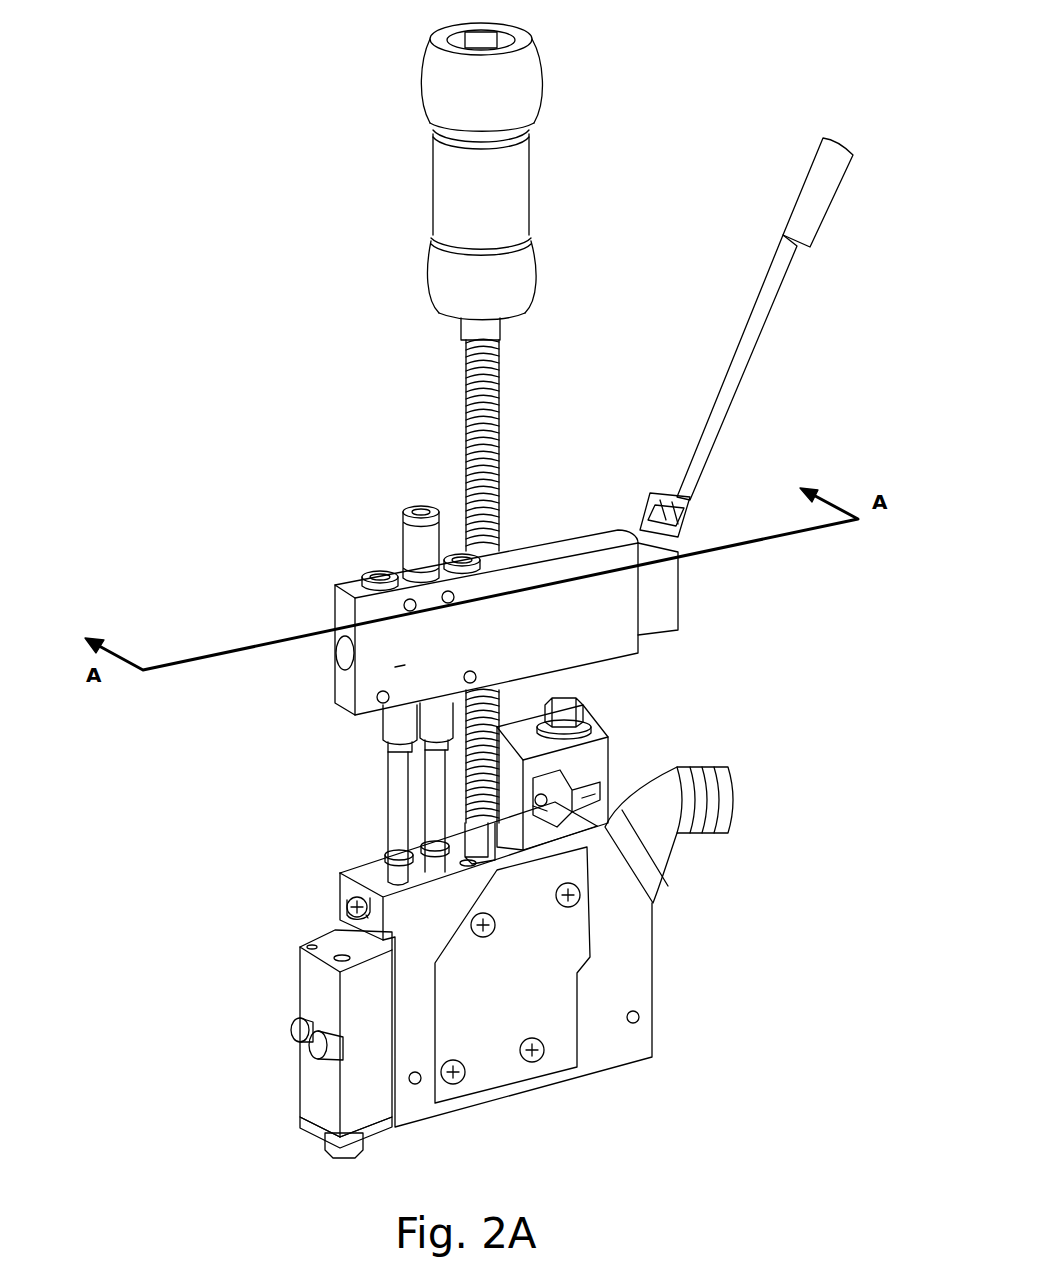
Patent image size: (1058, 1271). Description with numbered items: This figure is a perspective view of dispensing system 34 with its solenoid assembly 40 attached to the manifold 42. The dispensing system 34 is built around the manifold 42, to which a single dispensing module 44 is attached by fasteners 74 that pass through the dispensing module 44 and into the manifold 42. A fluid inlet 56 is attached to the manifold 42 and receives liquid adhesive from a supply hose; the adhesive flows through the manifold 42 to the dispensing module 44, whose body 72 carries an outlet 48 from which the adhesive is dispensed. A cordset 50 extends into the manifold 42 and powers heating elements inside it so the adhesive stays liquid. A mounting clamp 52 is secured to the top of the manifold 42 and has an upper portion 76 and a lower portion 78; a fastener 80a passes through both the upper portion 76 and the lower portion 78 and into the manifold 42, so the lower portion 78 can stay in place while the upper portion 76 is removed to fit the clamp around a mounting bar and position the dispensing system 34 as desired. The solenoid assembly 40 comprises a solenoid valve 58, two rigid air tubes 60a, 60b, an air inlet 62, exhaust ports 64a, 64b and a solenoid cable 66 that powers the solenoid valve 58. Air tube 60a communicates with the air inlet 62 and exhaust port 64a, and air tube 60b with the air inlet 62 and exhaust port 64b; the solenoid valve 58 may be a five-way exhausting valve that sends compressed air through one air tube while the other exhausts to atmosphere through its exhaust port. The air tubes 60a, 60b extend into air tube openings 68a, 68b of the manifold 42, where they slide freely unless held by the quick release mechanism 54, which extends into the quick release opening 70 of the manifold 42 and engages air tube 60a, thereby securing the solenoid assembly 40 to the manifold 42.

The dispensing system 34 is at (148, 528).
The solenoid assembly 40 is at (330, 578).
The manifold 42 is at (602, 1088).
The dispensing module 44 is at (292, 967).
The outlet 48 is at (333, 1152).
The cordset 50 is at (500, 386).
The mounting clamp 52 is at (618, 730).
The quick release mechanism 54 is at (345, 904).
The fluid inlet 56 is at (670, 833).
The solenoid valve 58 is at (405, 665).
The air tube 60a is at (400, 823).
The air tube 60b is at (437, 768).
The air inlet 62 is at (418, 506).
The exhaust port 64a is at (376, 569).
The exhaust port 64b is at (458, 552).
The solenoid cable 66 is at (757, 338).
The air tube opening 68a is at (385, 855).
The air tube opening 68b is at (435, 860).
The quick release opening 70 is at (369, 925).
The body 72 is at (380, 1093).
The fasteners 74 is at (300, 1047).
The upper portion 76 is at (525, 740).
The lower portion 78 is at (590, 805).
The fastener 80a is at (566, 699).